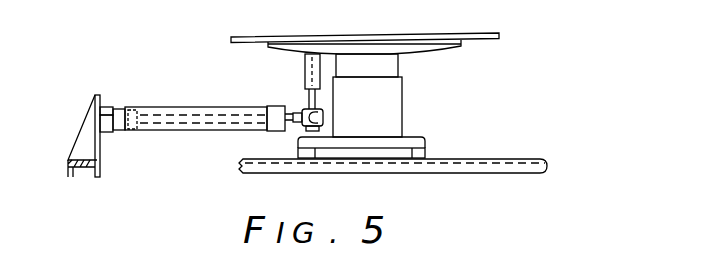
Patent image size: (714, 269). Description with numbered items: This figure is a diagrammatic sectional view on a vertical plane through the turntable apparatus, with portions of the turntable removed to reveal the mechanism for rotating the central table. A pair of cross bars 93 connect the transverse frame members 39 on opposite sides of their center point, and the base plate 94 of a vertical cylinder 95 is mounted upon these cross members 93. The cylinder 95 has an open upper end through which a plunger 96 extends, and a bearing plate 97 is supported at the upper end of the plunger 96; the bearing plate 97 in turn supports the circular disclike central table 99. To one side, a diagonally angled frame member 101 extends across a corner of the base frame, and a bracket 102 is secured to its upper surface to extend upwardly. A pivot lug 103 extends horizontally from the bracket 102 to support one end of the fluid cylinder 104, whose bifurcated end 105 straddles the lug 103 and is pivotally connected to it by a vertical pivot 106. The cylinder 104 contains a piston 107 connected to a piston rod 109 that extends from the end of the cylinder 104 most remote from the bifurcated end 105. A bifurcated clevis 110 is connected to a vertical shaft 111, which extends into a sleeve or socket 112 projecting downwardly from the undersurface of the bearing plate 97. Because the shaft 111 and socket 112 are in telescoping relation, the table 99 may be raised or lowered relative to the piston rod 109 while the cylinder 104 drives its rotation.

The transverse frame members 39 is at (457, 165).
The cross bars 93 is at (308, 157).
The base plate 94 is at (425, 140).
The vertical cylinder 95 is at (390, 110).
The plunger 96 is at (385, 65).
The bearing plate 97 is at (443, 48).
The central table 99 is at (417, 36).
The diagonally angled frame member 101 is at (83, 168).
The bracket 102 is at (82, 130).
The pivot lug 103 is at (107, 122).
The fluid cylinder 104 is at (213, 96).
The bifurcated end 105 is at (127, 108).
The vertical pivot 106 is at (112, 106).
The piston 107 is at (133, 132).
The piston rod 109 is at (292, 110).
The bifurcated clevis 110 is at (318, 123).
The vertical shaft 111 is at (315, 100).
The sleeve or socket 112 is at (305, 58).